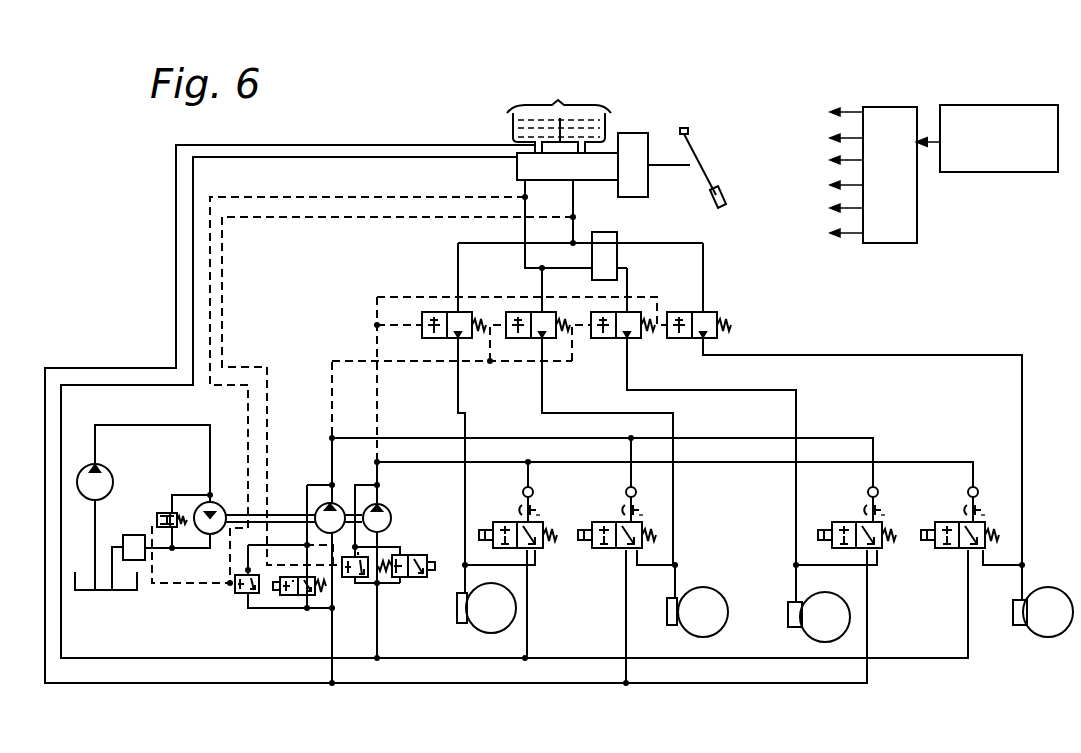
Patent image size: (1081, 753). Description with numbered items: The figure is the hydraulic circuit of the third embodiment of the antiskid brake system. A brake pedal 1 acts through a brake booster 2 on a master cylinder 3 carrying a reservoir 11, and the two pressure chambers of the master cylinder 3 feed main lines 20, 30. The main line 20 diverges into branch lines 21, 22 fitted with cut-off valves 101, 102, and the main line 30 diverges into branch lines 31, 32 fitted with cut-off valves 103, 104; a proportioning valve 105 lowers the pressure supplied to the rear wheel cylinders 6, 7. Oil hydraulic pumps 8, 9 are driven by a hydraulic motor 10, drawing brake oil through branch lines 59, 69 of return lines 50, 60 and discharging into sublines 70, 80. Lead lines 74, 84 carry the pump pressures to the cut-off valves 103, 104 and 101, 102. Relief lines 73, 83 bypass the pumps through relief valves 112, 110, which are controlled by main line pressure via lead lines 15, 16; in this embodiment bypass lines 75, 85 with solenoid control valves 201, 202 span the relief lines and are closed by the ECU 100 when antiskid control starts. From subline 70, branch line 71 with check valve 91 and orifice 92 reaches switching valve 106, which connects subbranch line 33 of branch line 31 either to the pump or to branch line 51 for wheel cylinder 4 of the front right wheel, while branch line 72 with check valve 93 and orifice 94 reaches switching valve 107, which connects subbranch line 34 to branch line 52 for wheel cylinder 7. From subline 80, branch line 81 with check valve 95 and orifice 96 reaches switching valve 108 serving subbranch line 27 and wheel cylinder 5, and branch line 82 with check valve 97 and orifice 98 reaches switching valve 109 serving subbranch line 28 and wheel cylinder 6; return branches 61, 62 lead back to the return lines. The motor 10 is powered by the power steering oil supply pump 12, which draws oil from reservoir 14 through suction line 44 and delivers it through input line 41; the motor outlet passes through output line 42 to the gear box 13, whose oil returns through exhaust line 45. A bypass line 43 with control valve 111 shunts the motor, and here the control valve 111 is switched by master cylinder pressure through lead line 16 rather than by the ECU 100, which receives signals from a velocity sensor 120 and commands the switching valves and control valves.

The brake pedal 1 is at (725, 195).
The brake booster 2 is at (646, 142).
The master cylinder 3 is at (612, 150).
The reservoir 11 is at (585, 120).
The main line 20 is at (527, 233).
The main line 30 is at (574, 198).
The proportioning valve 105 is at (618, 240).
The cut-off valve 101 is at (525, 338).
The cut-off valve 102 is at (600, 338).
The cut-off valve 103 is at (460, 313).
The cut-off valve 104 is at (680, 338).
The electronic control unit 100 is at (892, 107).
The velocity sensor 120 is at (1003, 105).
The return line 60 is at (378, 145).
The return line 50 is at (391, 157).
The lead line 16 is at (212, 313).
The lead line 15 is at (224, 340).
The lead line 84 is at (334, 386).
The lead line 74 is at (378, 386).
The branch line 31 is at (458, 408).
The subline 80 is at (508, 438).
The subline 70 is at (589, 450).
The branch line 21 is at (555, 413).
The branch line 22 is at (750, 390).
The branch line 32 is at (893, 355).
The input line 41 is at (175, 425).
The oil supply pump 12 is at (100, 470).
The suction line 44 is at (95, 528).
The reservoir 14 is at (96, 590).
The exhaust line 45 is at (113, 590).
The gear box 13 is at (132, 535).
The bypass line 43 is at (168, 513).
The control valve 111 is at (172, 550).
The output line 42 is at (208, 548).
The hydraulic motor 10 is at (218, 502).
The oil hydraulic pump 9 is at (318, 505).
The oil hydraulic pump 8 is at (388, 510).
The relief line 73 is at (355, 485).
The relief valve 112 is at (352, 580).
The bypass line 75 is at (397, 545).
The control valve 201 is at (410, 578).
The bypass line 85 is at (262, 600).
The relief valve 110 is at (240, 593).
The control valve 202 is at (302, 597).
The relief line 83 is at (306, 540).
The branch line 69 is at (334, 635).
The branch line 59 is at (379, 645).
The subbranch line 33 is at (465, 560).
The wheel cylinder 4 is at (470, 630).
The branch line 71 is at (531, 480).
The check valve 91 is at (534, 493).
The orifice 92 is at (538, 512).
The switching valve 106 is at (502, 522).
The branch line 51 is at (529, 632).
The branch line 81 is at (633, 480).
The check valve 95 is at (637, 493).
The orifice 96 is at (640, 512).
The switching valve 108 is at (592, 550).
The subbranch line 27 is at (655, 565).
The conduit 61 is at (624, 632).
The wheel cylinder 5 is at (682, 630).
The branch line 82 is at (873, 465).
The check valve 97 is at (879, 491).
The orifice 98 is at (882, 511).
The switching valve 109 is at (840, 522).
The subbranch line 28 is at (877, 568).
The conduit 62 is at (869, 630).
The wheel cylinder 6 is at (803, 632).
The branch line 72 is at (978, 470).
The check valve 93 is at (979, 492).
The orifice 94 is at (982, 512).
The switching valve 107 is at (945, 550).
The subbranch line 34 is at (1000, 565).
The branch line 52 is at (968, 650).
The wheel cylinder 7 is at (1037, 632).